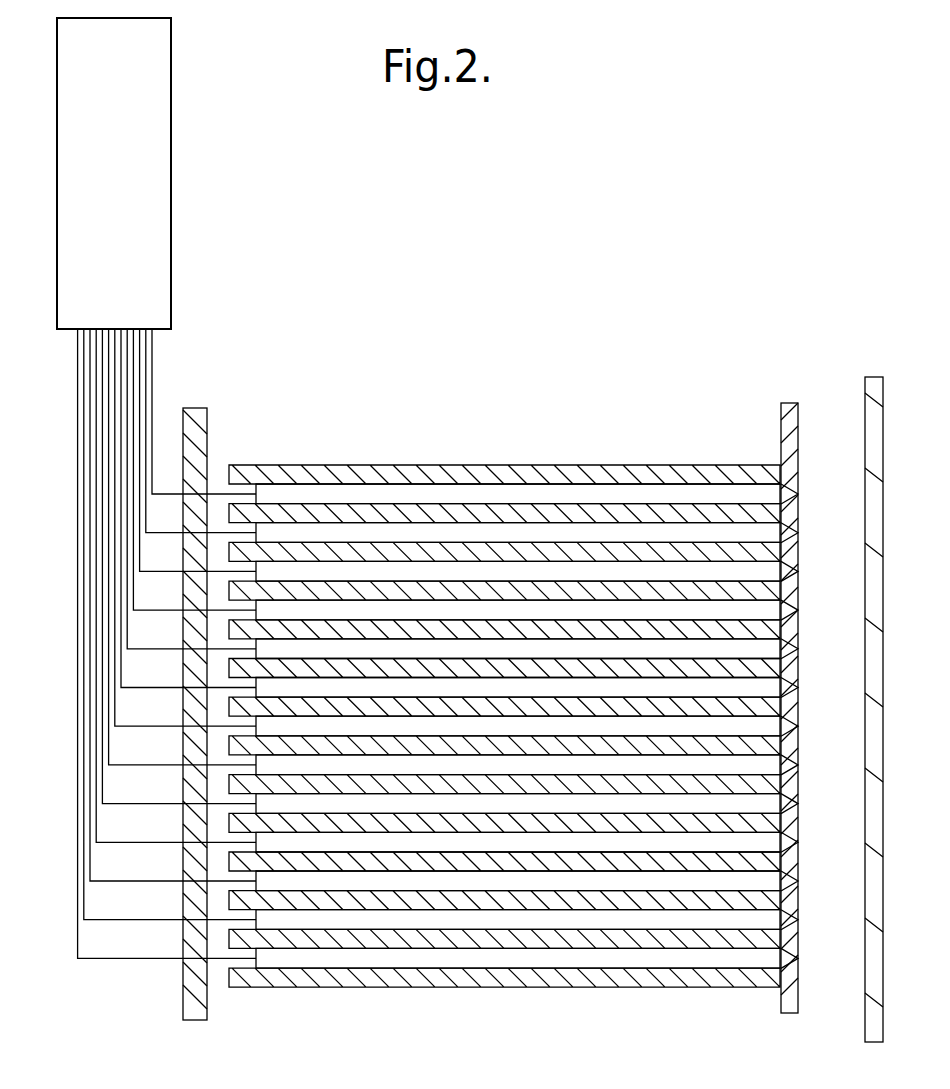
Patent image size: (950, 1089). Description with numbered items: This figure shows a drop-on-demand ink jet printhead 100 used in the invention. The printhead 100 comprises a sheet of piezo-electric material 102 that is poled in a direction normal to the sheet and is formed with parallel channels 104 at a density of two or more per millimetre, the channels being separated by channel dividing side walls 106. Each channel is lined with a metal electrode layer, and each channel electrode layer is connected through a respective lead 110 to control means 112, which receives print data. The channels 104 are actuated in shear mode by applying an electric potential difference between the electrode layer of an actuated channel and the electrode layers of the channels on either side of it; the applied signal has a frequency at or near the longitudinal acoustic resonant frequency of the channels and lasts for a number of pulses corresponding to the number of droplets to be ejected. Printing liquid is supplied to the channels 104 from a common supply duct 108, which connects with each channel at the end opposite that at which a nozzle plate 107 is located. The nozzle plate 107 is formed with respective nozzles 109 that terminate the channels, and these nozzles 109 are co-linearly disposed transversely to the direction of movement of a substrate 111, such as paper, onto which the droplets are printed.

The printhead 100 is at (543, 701).
The sheet of piezo-electric material 102 is at (275, 466).
The parallel channels 104 is at (418, 533).
The channel dividing side walls 106 is at (612, 582).
The nozzle plate 107 is at (788, 428).
The common supply duct 108 is at (215, 593).
The nozzles 109 is at (788, 522).
The lead 110 is at (147, 397).
The substrate 111 is at (866, 384).
The control means 112 is at (132, 176).